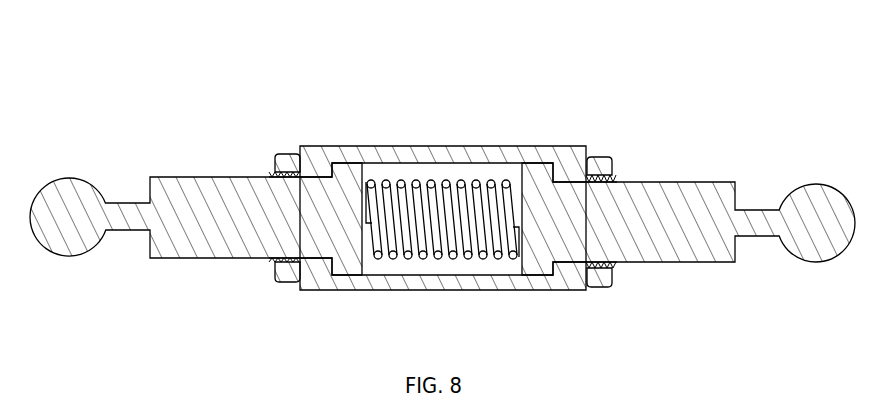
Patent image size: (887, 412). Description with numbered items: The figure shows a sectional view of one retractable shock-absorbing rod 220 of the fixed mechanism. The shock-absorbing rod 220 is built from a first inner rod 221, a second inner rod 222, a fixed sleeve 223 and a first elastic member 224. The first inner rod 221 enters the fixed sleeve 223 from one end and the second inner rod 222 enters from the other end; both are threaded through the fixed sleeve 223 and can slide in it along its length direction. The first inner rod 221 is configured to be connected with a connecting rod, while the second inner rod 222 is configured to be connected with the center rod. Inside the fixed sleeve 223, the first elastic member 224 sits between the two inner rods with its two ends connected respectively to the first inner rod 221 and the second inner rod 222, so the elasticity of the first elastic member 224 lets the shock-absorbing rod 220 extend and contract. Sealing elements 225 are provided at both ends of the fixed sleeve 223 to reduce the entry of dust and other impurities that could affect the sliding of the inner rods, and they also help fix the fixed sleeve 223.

The shock-absorbing rod 220 is at (108, 137).
The first inner rod 221 is at (222, 208).
The second inner rod 222 is at (691, 210).
The fixed sleeve 223 is at (360, 158).
The first elastic member 224 is at (447, 185).
The sealing element 225 is at (602, 160).